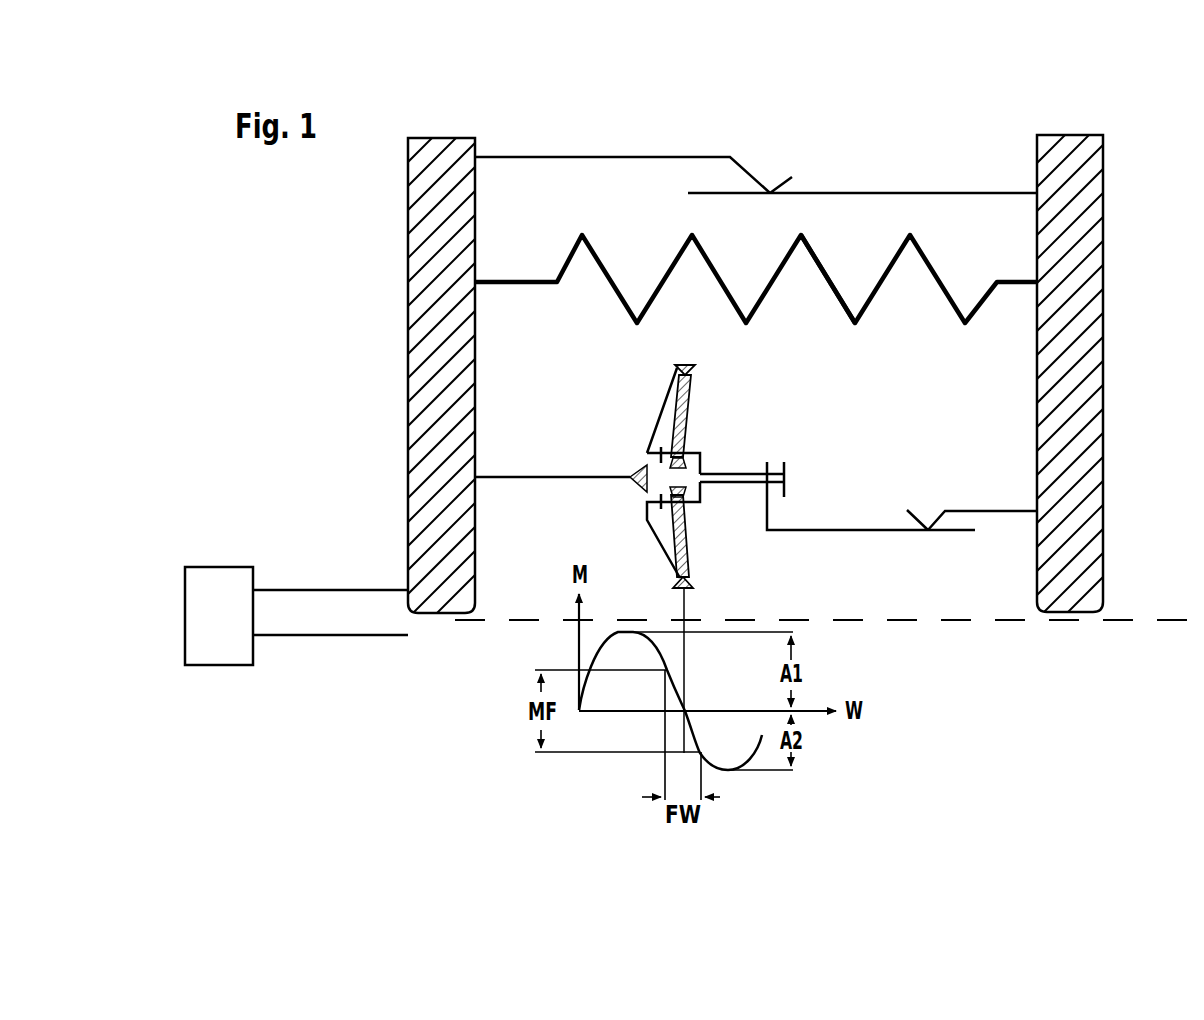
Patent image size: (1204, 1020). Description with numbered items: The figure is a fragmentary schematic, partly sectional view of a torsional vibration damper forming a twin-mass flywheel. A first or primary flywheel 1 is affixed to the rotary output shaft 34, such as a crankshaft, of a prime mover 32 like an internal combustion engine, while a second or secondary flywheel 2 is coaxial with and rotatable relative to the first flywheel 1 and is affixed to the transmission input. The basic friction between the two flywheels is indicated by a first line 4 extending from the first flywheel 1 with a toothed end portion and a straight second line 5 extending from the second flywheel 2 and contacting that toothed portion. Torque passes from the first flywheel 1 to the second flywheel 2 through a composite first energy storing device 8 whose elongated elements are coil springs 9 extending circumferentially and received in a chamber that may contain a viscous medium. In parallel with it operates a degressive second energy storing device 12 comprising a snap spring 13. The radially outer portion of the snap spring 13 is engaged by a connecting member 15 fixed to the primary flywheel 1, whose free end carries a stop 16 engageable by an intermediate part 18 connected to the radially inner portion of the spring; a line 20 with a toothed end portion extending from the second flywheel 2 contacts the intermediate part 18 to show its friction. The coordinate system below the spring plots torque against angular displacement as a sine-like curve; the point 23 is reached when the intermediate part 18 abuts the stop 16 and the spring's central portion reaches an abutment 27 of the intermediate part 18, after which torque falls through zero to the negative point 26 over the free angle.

The first flywheel 1 is at (428, 228).
The second flywheel 2 is at (1090, 220).
The first line 4 is at (625, 157).
The second line 5 is at (912, 193).
The first energy storing device 8 is at (882, 304).
The coil springs 9 is at (832, 288).
The second energy storing device 12 is at (690, 439).
The snap spring 13 is at (685, 413).
The connecting member 15 is at (548, 477).
The stop 16 is at (784, 470).
The intermediate part 18 is at (878, 528).
The line 20 is at (968, 511).
The point 23 is at (670, 665).
The point 26 is at (696, 756).
The abutment 27 is at (656, 449).
The prime mover 32 is at (212, 635).
The output shaft 34 is at (308, 627).